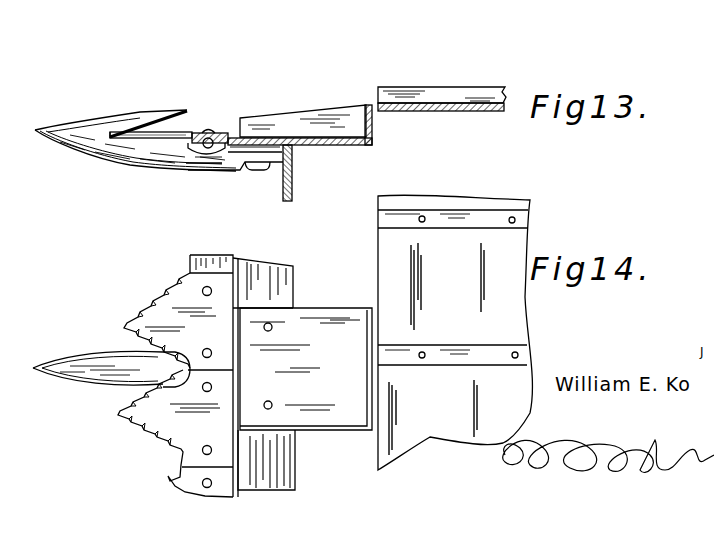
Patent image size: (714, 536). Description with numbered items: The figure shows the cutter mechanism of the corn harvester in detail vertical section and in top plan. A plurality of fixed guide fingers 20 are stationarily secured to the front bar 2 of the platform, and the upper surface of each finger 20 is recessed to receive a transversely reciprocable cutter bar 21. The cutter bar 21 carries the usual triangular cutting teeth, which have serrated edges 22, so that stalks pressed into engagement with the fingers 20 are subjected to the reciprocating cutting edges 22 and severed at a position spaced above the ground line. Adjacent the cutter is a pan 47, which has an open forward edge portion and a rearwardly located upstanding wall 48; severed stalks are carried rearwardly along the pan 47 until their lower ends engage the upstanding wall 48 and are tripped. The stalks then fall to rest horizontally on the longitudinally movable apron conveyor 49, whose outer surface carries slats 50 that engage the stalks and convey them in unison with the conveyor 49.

In FIG. 13, the longitudinally extending metallic bar 2 is at (294, 166).
In FIG. 13, the fixed guide finger 20 is at (118, 149).
In FIG. 14, the fixed guide finger 20 is at (103, 366).
In FIG. 13, the cutter bar 21 is at (218, 146).
In FIG. 13, the serrated cutting edge 22 is at (140, 137).
In FIG. 14, the serrated cutting edge 22 is at (156, 312).
In FIG. 13, the pan 47 is at (297, 124).
In FIG. 14, the pan 47 is at (307, 330).
In FIG. 13, the upstanding wall 48 is at (368, 106).
In FIG. 14, the upstanding wall 48 is at (368, 340).
In FIG. 13, the conveyor 49 is at (460, 112).
In FIG. 14, the conveyor 49 is at (445, 204).
In FIG. 13, the slat 50 is at (441, 102).
In FIG. 14, the slat 50 is at (433, 354).